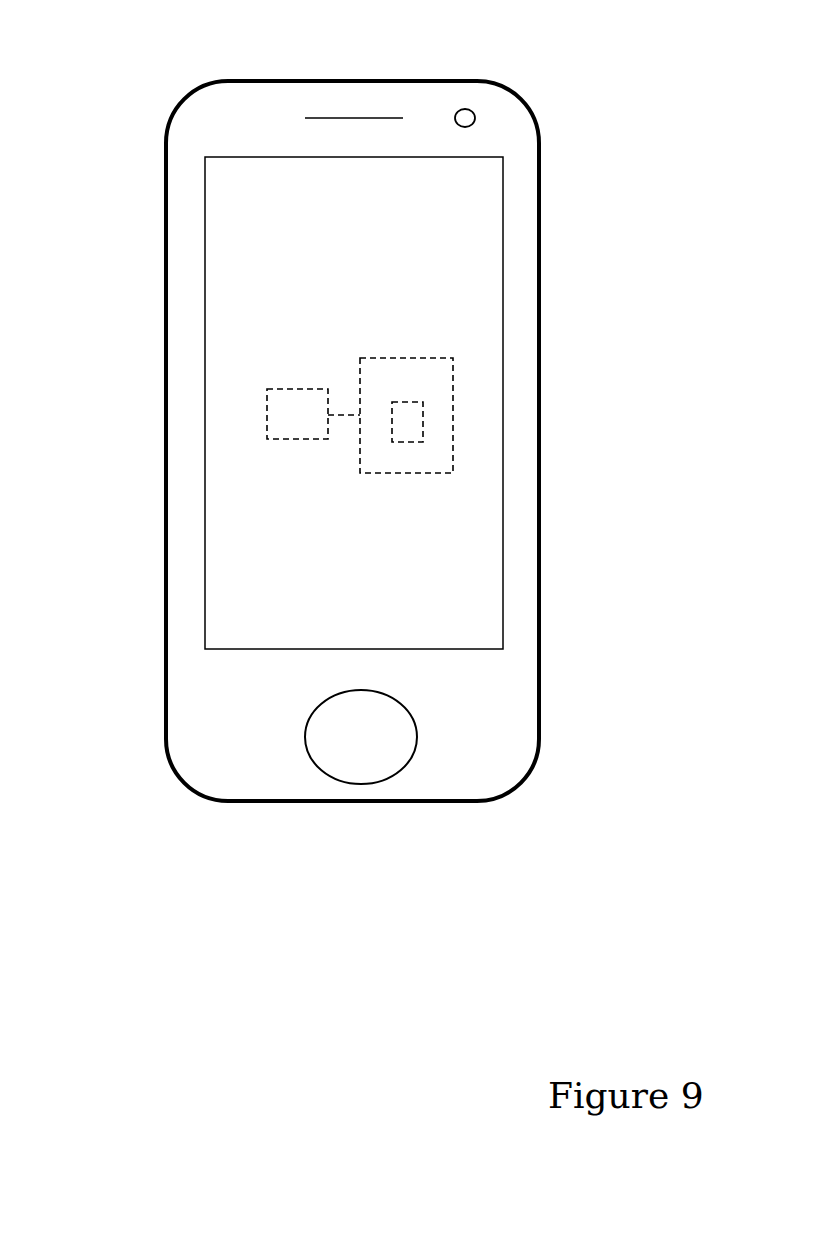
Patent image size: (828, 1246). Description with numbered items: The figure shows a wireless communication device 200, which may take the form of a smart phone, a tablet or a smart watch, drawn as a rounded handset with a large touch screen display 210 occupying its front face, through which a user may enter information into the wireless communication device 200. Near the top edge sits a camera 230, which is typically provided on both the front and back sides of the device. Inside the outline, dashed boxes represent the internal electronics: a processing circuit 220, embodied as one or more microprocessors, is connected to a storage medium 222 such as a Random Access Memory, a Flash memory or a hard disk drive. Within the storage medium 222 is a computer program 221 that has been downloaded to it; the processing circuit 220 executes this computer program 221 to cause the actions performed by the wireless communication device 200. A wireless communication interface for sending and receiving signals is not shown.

The wireless communication device 200 is at (248, 88).
The touch screen display 210 is at (227, 282).
The processing circuit 220 is at (285, 395).
The computer program 221 is at (405, 442).
The storage medium 222 is at (375, 365).
The camera 230 is at (466, 112).